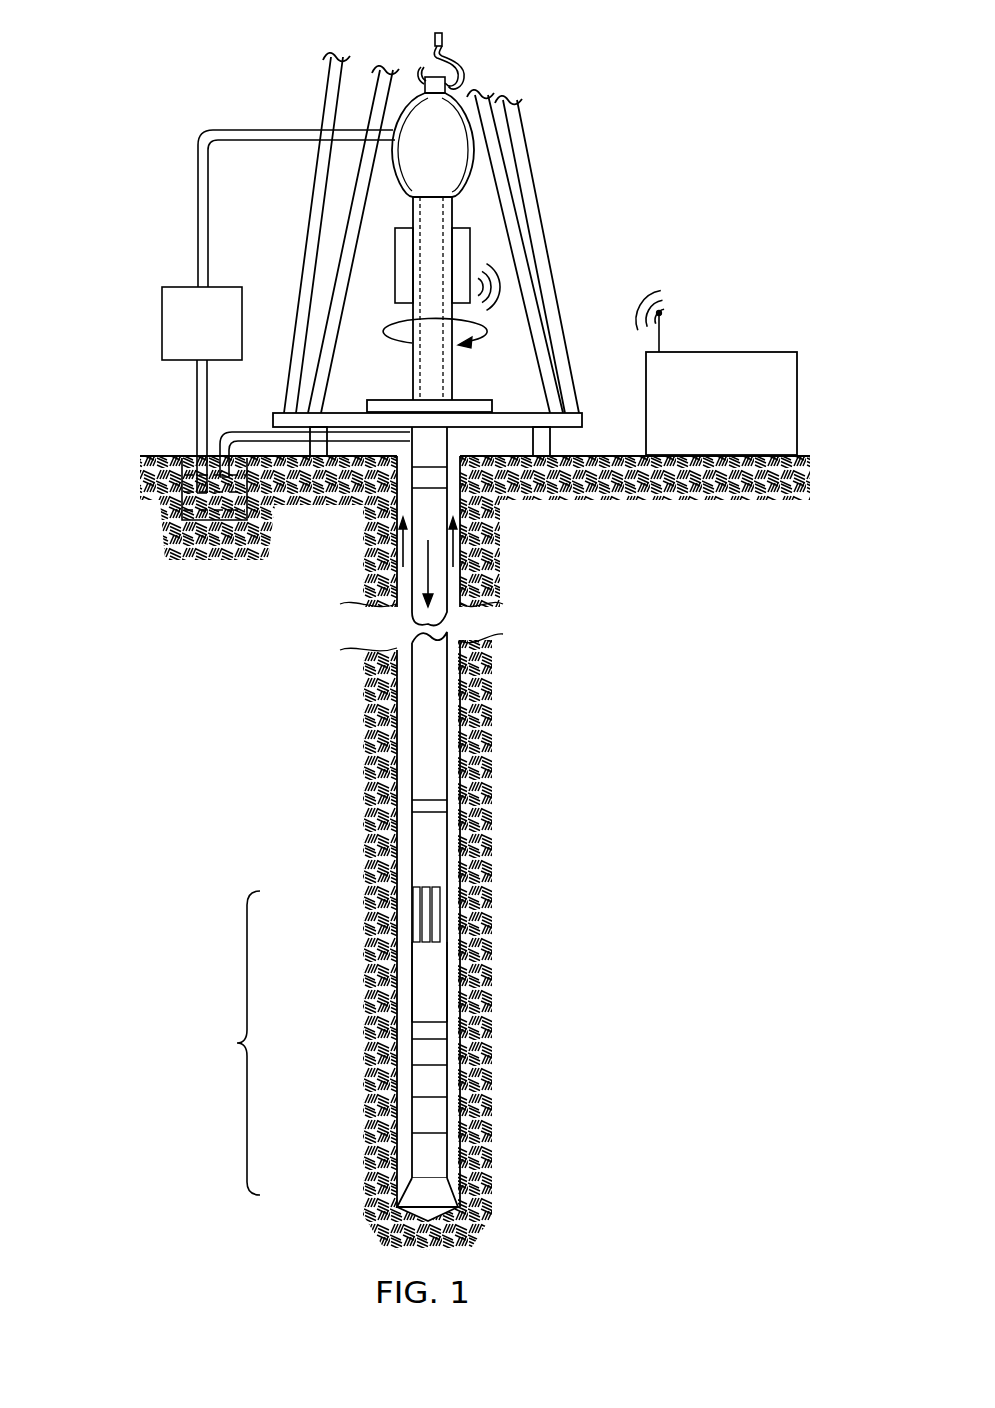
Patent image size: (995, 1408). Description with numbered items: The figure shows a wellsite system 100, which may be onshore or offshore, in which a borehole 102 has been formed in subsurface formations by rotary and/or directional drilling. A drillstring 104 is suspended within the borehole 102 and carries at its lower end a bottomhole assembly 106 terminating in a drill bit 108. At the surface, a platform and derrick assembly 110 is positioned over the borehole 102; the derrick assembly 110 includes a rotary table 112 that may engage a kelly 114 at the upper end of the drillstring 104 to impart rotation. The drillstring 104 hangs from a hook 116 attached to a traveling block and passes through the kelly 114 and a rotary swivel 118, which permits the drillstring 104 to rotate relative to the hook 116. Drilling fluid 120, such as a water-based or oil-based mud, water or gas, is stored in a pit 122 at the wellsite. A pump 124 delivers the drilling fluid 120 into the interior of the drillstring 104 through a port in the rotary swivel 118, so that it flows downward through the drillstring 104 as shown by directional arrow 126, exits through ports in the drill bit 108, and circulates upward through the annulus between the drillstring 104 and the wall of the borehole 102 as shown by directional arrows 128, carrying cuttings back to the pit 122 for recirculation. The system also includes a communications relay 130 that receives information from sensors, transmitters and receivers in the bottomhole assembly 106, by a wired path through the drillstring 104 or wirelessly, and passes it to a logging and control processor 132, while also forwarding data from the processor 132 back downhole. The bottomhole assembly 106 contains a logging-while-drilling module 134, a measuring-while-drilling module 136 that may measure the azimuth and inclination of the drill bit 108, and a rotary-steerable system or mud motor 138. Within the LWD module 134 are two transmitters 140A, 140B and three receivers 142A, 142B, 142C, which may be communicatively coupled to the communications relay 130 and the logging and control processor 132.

The wellsite system 100 is at (120, 40).
The borehole 102 is at (458, 448).
The drillstring 104 is at (422, 448).
The bottomhole assembly 106 is at (233, 1042).
The drill bit 108 is at (433, 1195).
The platform and derrick assembly 110 is at (569, 154).
The rotary table 112 is at (458, 400).
The kelly 114 is at (425, 372).
The hook 116 is at (435, 44).
The rotary swivel 118 is at (410, 199).
The drilling fluid 120 is at (203, 521).
The pit 122 is at (188, 448).
The pump 124 is at (174, 365).
The directional arrow 126 is at (428, 580).
The directional arrows 128 is at (397, 557).
The communications relay 130 is at (395, 289).
The logging and control processor 132 is at (732, 352).
The logging-while-drilling module 134 is at (428, 1003).
The measuring-while-drilling module 136 is at (428, 1122).
The rotary-steerable system or mud motor 138 is at (433, 1148).
The transmitter 140A is at (422, 1085).
The transmitter 140B is at (423, 1030).
The receiver 142A is at (437, 888).
The receiver 142B is at (427, 915).
The receiver 142C is at (440, 935).